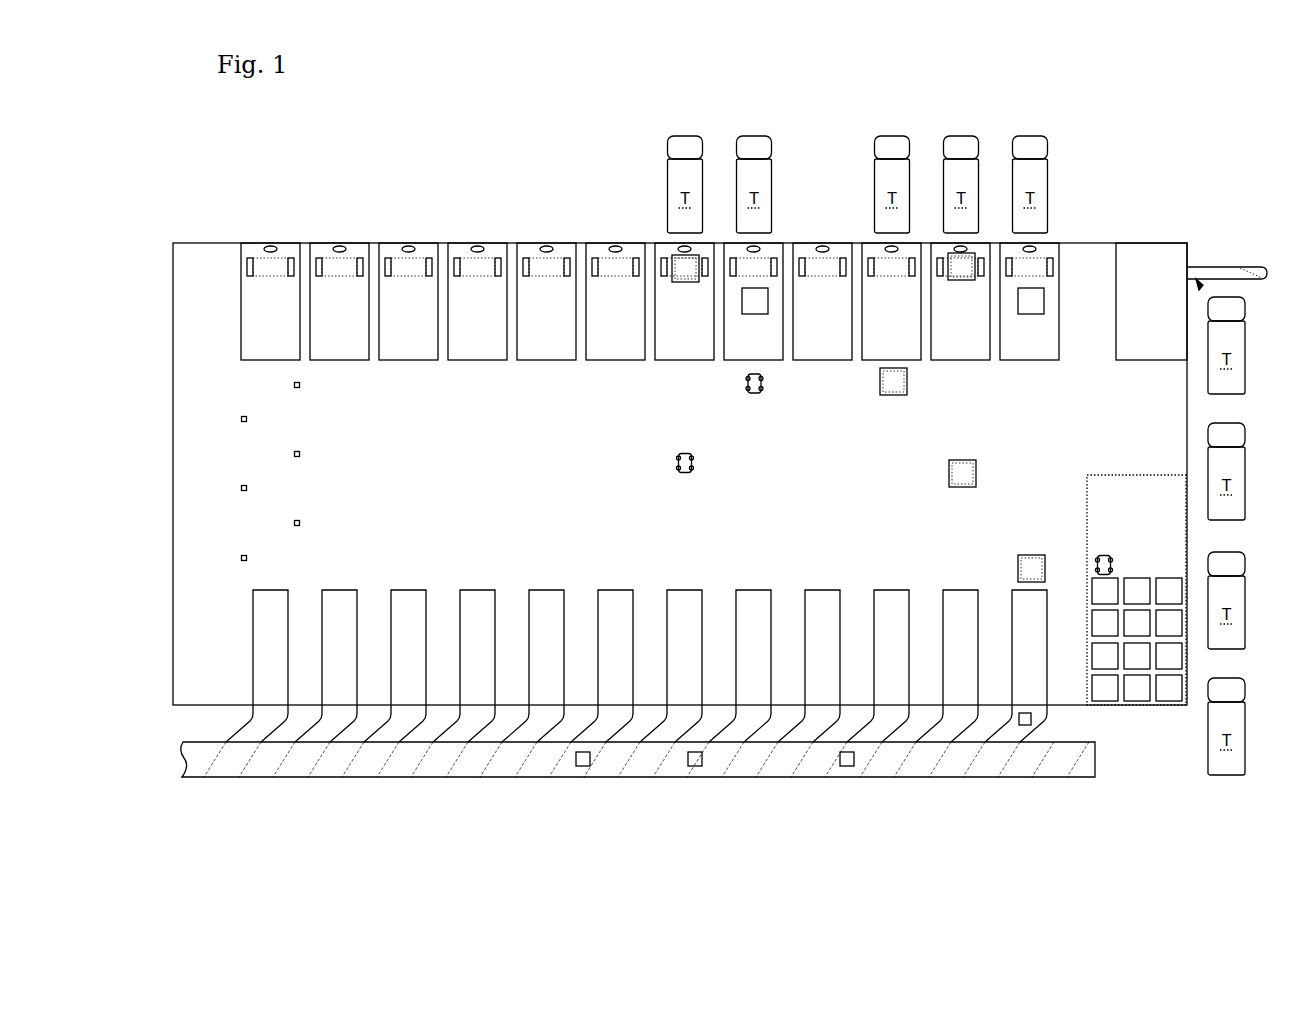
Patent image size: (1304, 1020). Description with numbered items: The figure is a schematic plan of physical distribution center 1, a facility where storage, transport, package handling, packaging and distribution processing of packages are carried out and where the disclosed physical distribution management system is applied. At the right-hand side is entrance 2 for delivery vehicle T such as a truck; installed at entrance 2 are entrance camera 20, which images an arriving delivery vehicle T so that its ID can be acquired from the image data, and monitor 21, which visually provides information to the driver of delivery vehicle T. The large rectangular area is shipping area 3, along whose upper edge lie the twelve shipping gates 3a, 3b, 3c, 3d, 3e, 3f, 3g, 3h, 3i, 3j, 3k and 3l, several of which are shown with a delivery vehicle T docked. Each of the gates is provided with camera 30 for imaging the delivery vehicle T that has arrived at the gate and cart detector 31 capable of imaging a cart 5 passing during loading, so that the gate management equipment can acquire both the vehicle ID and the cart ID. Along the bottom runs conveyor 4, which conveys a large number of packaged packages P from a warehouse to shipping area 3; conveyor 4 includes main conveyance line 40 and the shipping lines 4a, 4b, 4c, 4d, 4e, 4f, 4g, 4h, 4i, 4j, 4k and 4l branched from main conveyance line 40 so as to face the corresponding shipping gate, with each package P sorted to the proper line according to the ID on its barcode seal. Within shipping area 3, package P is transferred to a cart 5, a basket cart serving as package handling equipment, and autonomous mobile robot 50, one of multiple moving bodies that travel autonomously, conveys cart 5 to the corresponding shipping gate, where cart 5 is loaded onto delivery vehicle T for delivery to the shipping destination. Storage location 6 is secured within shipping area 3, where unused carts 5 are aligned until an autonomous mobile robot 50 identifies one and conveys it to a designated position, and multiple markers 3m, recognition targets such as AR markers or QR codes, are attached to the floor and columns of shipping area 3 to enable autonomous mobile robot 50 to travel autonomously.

The physical distribution center 1 is at (198, 238).
The entrance 2 is at (1219, 259).
The entrance camera 20 is at (1198, 277).
The monitor 21 is at (1248, 276).
The shipping area 3 is at (504, 486).
The shipping gate 3a is at (1017, 348).
The shipping gate 3b is at (948, 348).
The shipping gate 3c is at (879, 348).
The shipping gate 3d is at (810, 348).
The shipping gate 3e is at (741, 348).
The shipping gate 3f is at (672, 348).
The shipping gate 3g is at (603, 348).
The shipping gate 3h is at (534, 348).
The shipping gate 3i is at (465, 348).
The shipping gate 3j is at (396, 348).
The shipping gate 3k is at (327, 348).
The shipping gate 3l is at (258, 348).
The marker 3m is at (240, 412).
The camera 30 is at (271, 245).
The cart detector 31 is at (326, 253).
The conveyor 4 is at (1100, 758).
The shipping line 4a is at (1018, 658).
The shipping line 4b is at (949, 658).
The shipping line 4c is at (880, 658).
The shipping line 4d is at (811, 658).
The shipping line 4e is at (742, 658).
The shipping line 4f is at (673, 658).
The shipping line 4g is at (604, 658).
The shipping line 4h is at (535, 658).
The shipping line 4i is at (466, 658).
The shipping line 4j is at (397, 658).
The shipping line 4k is at (328, 658).
The shipping line 4l is at (259, 658).
The main conveyance line 40 is at (214, 762).
The cart 5 is at (741, 298).
The autonomous mobile robot 50 is at (756, 395).
The storage location 6 is at (1125, 508).
The delivery vehicle T is at (957, 455).
The package P is at (591, 762).